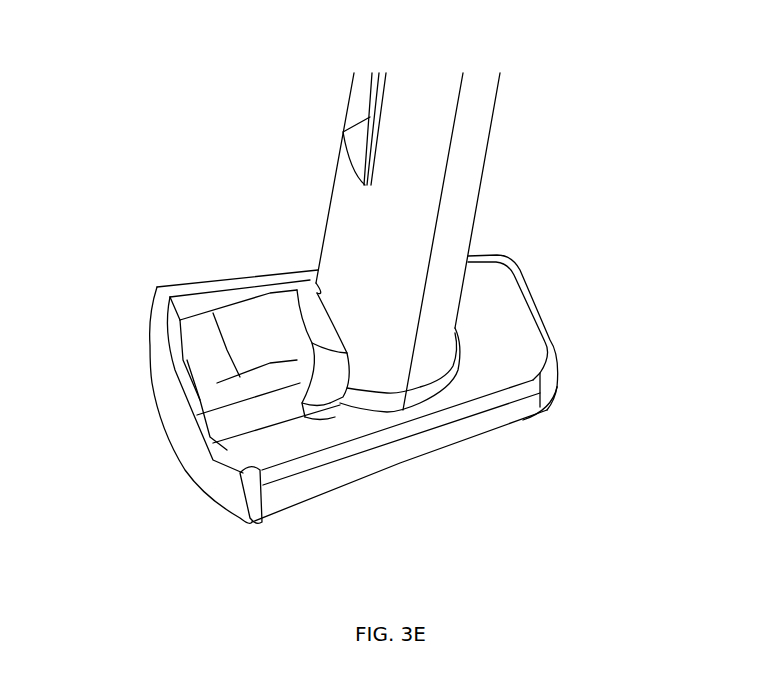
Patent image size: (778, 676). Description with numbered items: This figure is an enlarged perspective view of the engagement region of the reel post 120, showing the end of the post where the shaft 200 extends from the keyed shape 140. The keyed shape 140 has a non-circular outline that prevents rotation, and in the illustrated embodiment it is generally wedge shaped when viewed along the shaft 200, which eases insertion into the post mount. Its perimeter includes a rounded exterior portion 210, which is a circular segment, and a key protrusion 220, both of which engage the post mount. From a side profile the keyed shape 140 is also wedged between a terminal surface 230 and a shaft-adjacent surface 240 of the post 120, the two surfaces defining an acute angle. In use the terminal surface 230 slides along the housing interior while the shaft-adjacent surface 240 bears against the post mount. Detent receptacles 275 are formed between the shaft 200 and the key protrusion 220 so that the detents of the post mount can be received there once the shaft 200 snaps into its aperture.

The post 120 is at (547, 87).
The shaft 200 is at (350, 225).
The detent receptacles 275 is at (296, 283).
The key protrusion 220 is at (245, 340).
The shaft-adjacent surface 240 is at (517, 320).
The rounded exterior portion 210 is at (197, 458).
The terminal surface 230 is at (380, 472).
The keyed shape 140 is at (513, 433).